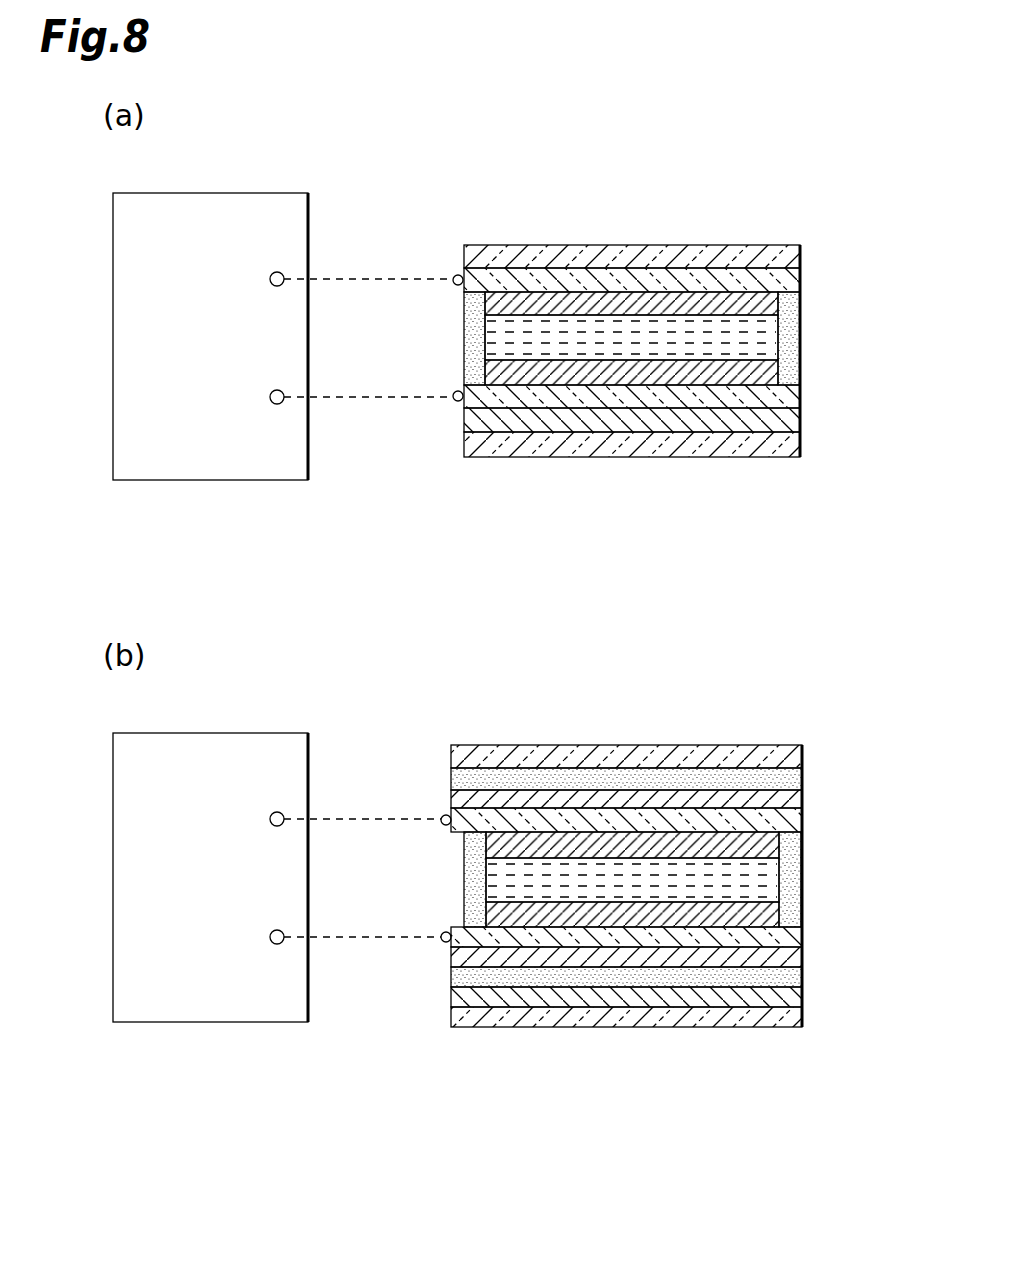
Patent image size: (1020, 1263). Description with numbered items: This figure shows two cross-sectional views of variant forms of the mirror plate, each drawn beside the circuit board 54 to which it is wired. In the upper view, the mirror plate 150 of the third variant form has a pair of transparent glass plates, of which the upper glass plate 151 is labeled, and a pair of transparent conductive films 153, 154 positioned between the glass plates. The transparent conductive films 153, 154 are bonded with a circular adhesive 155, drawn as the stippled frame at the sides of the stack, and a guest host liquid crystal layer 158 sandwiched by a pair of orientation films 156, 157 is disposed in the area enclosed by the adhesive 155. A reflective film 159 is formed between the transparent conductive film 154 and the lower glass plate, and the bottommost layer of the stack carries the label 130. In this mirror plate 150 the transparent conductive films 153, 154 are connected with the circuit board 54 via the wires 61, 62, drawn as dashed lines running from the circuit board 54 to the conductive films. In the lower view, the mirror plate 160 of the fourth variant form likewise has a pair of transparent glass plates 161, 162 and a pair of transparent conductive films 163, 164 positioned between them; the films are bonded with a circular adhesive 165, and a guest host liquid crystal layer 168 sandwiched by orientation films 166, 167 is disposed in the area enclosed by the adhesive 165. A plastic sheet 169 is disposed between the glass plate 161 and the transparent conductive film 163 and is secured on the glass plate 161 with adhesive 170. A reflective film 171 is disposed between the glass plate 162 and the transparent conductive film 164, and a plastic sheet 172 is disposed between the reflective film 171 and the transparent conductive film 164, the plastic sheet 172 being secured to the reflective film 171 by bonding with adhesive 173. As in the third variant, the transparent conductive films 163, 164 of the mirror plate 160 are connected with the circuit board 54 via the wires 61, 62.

The circuit board 54 is at (237, 203).
The wire 61 is at (383, 275).
The wire 62 is at (383, 400).
The mirror plate 150 is at (665, 333).
The transparent glass plate 151 is at (752, 252).
The transparent conductive film 153 is at (797, 278).
The transparent conductive film 154 is at (782, 396).
The circular adhesive 155 is at (792, 350).
The orientation film 156 is at (773, 307).
The orientation film 157 is at (770, 378).
The guest host liquid crystal layer 158 is at (773, 335).
The reflective film 159 is at (790, 423).
The second substrate 130 is at (725, 458).
The mirror plate 160 is at (657, 851).
The transparent glass plate 161 is at (770, 748).
The transparent glass plate 162 is at (745, 1010).
The transparent conductive film 163 is at (785, 820).
The transparent conductive film 164 is at (782, 943).
The circular adhesive 165 is at (785, 870).
The orientation film 166 is at (770, 843).
The orientation film 167 is at (772, 905).
The guest host liquid crystal layer 168 is at (772, 885).
The plastic sheet 169 is at (782, 797).
The adhesive 170 is at (790, 777).
The reflective film 171 is at (675, 988).
The plastic sheet 172 is at (550, 957).
The adhesive 173 is at (620, 972).